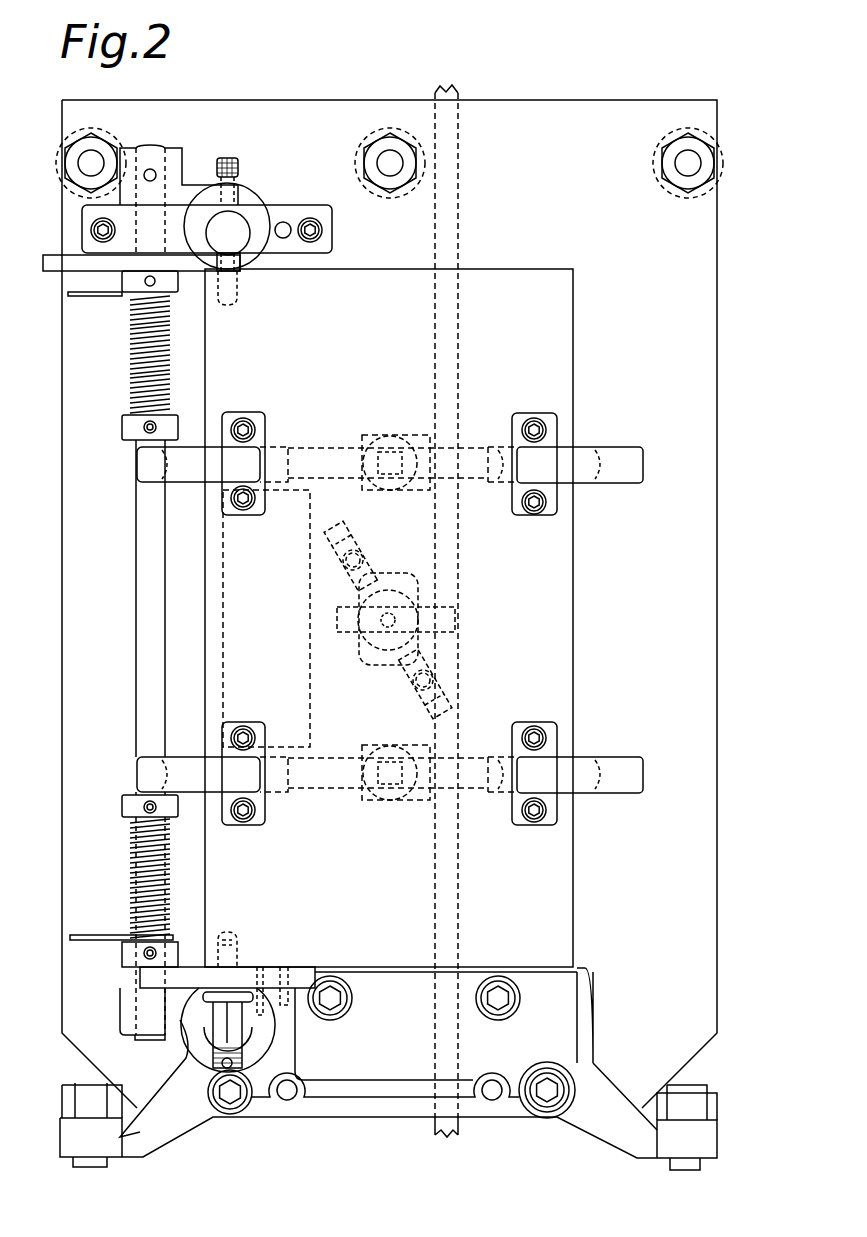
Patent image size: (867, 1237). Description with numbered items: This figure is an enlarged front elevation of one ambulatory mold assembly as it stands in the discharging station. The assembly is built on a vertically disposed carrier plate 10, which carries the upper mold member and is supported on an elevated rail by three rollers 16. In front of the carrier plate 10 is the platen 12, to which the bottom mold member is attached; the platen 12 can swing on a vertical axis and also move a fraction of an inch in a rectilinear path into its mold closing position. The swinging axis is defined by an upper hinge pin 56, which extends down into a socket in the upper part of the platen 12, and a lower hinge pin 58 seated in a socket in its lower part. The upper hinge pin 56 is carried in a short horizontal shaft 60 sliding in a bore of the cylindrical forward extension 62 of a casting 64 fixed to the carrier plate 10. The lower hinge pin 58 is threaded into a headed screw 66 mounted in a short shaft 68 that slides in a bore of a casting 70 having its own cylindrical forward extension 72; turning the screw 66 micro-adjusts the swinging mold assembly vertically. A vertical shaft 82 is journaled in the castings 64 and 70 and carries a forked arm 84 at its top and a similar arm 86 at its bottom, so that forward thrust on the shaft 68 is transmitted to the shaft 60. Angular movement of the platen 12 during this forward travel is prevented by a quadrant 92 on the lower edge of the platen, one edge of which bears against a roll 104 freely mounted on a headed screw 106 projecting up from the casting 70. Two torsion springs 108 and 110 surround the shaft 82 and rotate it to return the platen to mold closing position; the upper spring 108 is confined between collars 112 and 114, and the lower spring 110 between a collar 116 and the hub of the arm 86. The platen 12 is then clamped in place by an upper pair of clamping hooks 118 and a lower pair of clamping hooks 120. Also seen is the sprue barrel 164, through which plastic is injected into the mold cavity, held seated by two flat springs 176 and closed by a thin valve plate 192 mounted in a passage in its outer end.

The carrier plate 10 is at (547, 110).
The platen 12 is at (529, 275).
The rollers 16 is at (57, 158).
The upper hinge pin 56 is at (237, 158).
The lower hinge pin 58 is at (238, 945).
The short horizontal shaft 60 is at (240, 223).
The cylindrical forward extension 62 is at (263, 217).
The casting 64 is at (333, 217).
The headed screw 66 is at (243, 1058).
The short shaft 68 is at (240, 1027).
The casting 70 is at (318, 1112).
The cylindrical forward extension 72 is at (177, 1023).
The vertical shaft 82 is at (145, 580).
The forked arm 84 is at (192, 188).
The arm 86 is at (122, 962).
The quadrant 92 is at (188, 965).
The roll 104 is at (293, 978).
The headed screw 106 is at (273, 968).
The torsion spring 108 is at (130, 350).
The torsion spring 110 is at (130, 853).
The collar 112 is at (127, 278).
The collar 114 is at (122, 428).
The collar 116 is at (120, 807).
The upper pair of clamping hooks 118 is at (145, 465).
The lower pair of clamping hooks 120 is at (140, 772).
The sprue barrel 164 is at (377, 645).
The flat springs 176 is at (332, 548).
The valve plate 192 is at (457, 618).